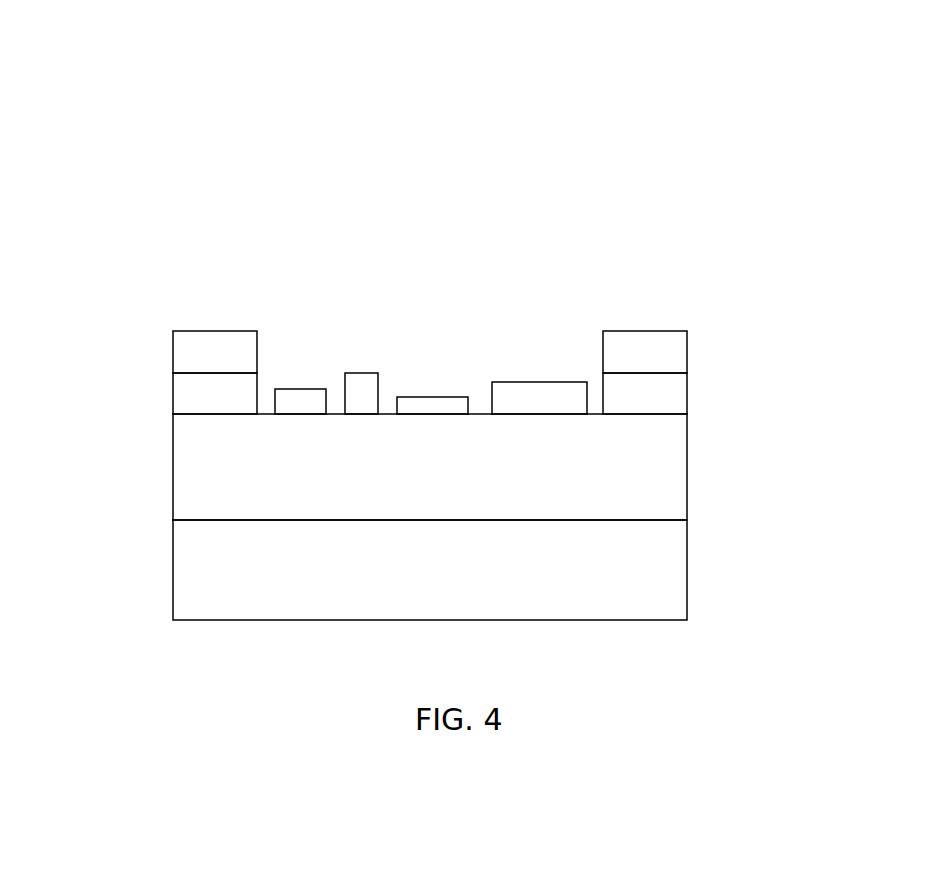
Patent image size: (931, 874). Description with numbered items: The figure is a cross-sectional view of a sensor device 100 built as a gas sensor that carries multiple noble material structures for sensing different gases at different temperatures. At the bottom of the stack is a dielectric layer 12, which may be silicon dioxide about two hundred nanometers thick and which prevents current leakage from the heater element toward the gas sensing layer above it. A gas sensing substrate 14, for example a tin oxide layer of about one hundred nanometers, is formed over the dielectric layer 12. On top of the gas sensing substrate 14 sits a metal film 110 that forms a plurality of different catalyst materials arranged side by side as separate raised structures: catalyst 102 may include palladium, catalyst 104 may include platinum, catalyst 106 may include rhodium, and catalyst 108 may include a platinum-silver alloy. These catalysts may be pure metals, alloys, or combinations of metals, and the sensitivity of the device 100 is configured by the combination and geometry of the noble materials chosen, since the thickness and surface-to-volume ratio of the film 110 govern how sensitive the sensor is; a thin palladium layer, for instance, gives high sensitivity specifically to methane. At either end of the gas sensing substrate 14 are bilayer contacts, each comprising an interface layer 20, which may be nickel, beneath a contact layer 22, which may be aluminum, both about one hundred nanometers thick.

The sensor device 100 is at (453, 30).
The dielectric layer 12 is at (675, 583).
The gas sensing substrate 14 is at (675, 490).
The interface layer 20 is at (195, 400).
The contact layer 22 is at (195, 357).
The catalyst 102 is at (297, 389).
The catalyst 104 is at (358, 373).
The catalyst 106 is at (422, 397).
The catalyst 108 is at (512, 382).
The metal film 110 is at (335, 266).